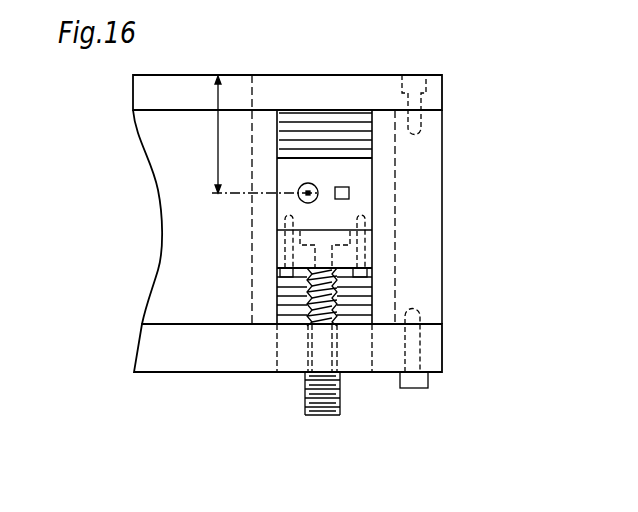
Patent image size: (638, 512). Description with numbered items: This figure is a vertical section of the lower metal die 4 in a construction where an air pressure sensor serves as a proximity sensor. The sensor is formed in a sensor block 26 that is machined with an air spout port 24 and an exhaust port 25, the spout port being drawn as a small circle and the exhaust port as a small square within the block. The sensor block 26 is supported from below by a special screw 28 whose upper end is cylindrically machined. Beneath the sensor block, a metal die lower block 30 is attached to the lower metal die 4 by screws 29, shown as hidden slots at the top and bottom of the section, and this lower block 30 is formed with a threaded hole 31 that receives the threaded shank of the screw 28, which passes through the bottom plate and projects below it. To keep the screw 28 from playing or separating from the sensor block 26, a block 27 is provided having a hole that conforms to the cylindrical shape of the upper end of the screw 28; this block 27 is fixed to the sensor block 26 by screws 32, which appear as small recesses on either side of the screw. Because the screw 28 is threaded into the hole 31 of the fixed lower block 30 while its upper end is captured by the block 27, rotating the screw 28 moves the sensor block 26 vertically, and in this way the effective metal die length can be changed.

The metal die 4 is at (182, 248).
The air spout port 24 is at (316, 187).
The exhaust port 25 is at (349, 190).
The sensor block 26 is at (363, 208).
The block 27 is at (348, 256).
The special screw 28 is at (338, 400).
The screws 29 is at (413, 83).
The metal die lower block 30 is at (180, 367).
The threaded hole 31 is at (303, 348).
The screws 32 is at (293, 273).